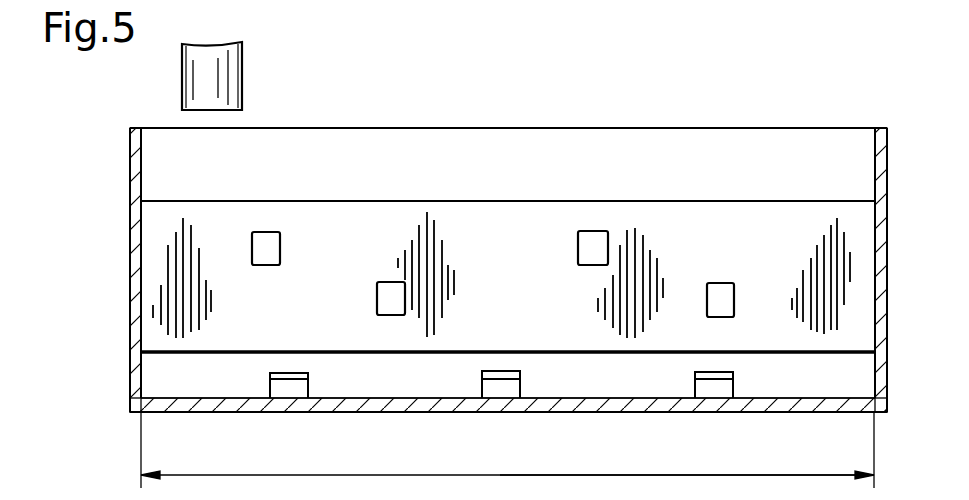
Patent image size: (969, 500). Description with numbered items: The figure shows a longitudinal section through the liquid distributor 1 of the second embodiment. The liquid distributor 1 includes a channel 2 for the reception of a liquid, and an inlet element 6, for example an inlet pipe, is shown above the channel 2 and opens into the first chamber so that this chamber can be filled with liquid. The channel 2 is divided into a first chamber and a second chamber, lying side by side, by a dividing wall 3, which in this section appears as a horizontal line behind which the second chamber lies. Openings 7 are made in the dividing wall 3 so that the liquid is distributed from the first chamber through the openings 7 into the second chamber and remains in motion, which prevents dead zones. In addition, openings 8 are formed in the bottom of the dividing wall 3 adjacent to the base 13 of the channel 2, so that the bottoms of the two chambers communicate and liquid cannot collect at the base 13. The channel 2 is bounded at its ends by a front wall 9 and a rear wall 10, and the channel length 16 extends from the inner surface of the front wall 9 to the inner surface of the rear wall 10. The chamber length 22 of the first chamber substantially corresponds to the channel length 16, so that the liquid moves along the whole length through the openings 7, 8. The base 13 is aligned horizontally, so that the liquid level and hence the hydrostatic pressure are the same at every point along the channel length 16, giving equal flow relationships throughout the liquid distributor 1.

The liquid distributor 1 is at (641, 121).
The channel 2 is at (778, 120).
The dividing wall 3 is at (810, 214).
The inlet element 6 is at (222, 78).
The openings 7 is at (252, 248).
The openings 8 is at (297, 390).
The front wall 9 is at (132, 284).
The rear wall 10 is at (878, 268).
The base 13 is at (402, 405).
The channel length 16 is at (756, 474).
The chamber length 22 is at (652, 475).